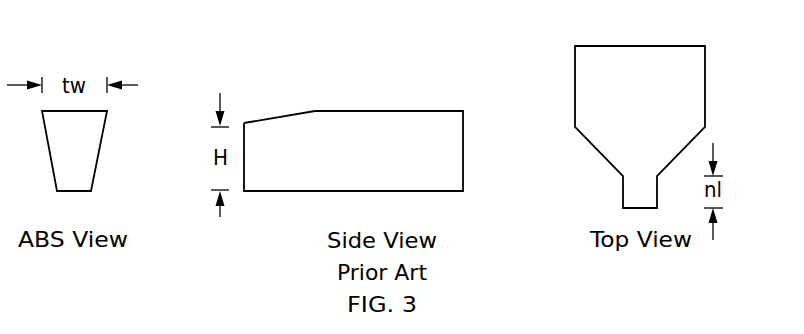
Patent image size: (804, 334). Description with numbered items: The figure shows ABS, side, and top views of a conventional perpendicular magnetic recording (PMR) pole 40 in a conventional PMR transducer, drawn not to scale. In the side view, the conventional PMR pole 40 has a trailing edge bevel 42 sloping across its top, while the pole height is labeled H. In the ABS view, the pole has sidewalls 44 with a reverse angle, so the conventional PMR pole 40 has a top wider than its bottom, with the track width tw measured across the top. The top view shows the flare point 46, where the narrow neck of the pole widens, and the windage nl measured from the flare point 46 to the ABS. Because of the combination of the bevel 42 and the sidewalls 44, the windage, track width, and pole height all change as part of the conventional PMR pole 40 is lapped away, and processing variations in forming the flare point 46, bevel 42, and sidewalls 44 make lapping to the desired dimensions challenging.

The conventional perpendicular magnetic recording pole 40 is at (397, 40).
The trailing edge bevel 42 is at (281, 93).
The sidewalls 44 is at (125, 152).
The flare point 46 is at (592, 177).